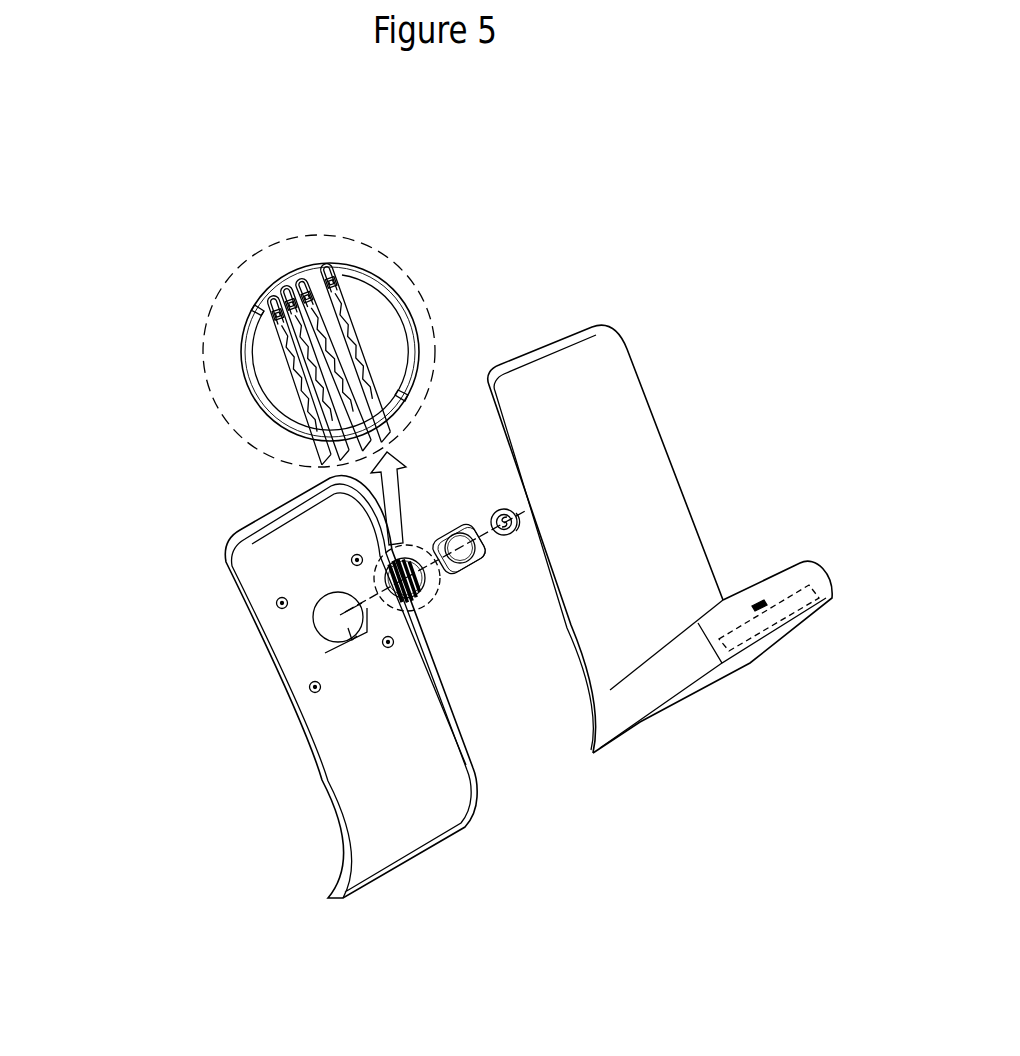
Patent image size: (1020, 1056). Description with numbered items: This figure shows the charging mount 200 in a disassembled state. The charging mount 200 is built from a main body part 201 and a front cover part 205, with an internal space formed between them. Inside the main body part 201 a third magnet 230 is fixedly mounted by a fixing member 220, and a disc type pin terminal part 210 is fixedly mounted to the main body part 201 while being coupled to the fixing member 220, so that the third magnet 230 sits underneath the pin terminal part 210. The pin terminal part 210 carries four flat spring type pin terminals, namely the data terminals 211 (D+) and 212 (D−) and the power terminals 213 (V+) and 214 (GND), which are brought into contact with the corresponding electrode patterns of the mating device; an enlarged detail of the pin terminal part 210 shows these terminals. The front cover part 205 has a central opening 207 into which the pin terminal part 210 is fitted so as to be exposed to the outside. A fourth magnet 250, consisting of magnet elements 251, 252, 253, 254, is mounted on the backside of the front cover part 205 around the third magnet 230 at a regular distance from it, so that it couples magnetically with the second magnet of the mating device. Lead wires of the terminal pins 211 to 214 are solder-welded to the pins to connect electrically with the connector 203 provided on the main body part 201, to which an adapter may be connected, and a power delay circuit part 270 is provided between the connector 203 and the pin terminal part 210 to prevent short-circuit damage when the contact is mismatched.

The charging mount 200 is at (132, 528).
The main body part 201 is at (652, 483).
The connector 203 is at (762, 609).
The front cover part 205 is at (366, 786).
The central opening 207 is at (350, 634).
The pin terminal part 210 is at (304, 282).
The pin terminal (D+) 211 is at (296, 282).
The pin terminal (D−) 212 is at (318, 275).
The pin terminal (V+) 213 is at (262, 292).
The pin terminal (GND) 214 is at (346, 278).
The fixing member 220 is at (460, 524).
The third magnet 230 is at (507, 535).
The fourth magnet 250 is at (156, 770).
The magnet 251 is at (352, 565).
The magnet 252 is at (278, 607).
The magnet 253 is at (311, 692).
The magnet 254 is at (384, 647).
The power delay circuit part 270 is at (810, 610).